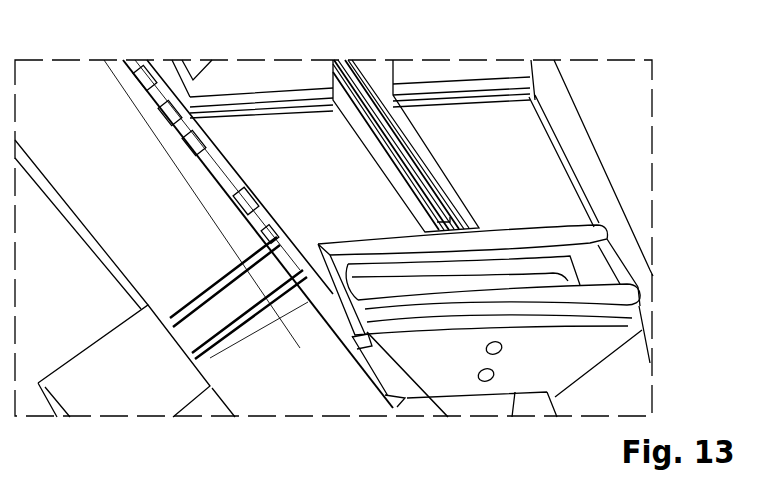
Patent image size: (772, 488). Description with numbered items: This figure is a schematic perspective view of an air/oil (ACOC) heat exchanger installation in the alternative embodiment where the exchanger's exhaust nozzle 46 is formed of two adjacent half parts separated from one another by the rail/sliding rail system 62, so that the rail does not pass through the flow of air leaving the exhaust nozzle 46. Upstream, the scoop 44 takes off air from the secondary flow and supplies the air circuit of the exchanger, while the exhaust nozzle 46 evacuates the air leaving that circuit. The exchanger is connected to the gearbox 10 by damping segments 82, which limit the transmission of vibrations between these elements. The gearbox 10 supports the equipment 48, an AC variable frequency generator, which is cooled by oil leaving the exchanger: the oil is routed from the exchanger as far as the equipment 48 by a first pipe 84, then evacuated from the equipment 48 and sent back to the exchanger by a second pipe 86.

The gearbox 10 is at (84, 140).
The scoop 44 is at (614, 268).
The exhaust nozzle 46 is at (405, 72).
The equipment 48 is at (123, 378).
The rail/sliding rail system 62 is at (431, 122).
The damping segments 82 is at (190, 138).
The first pipe 84 is at (251, 333).
The second pipe 86 is at (245, 277).